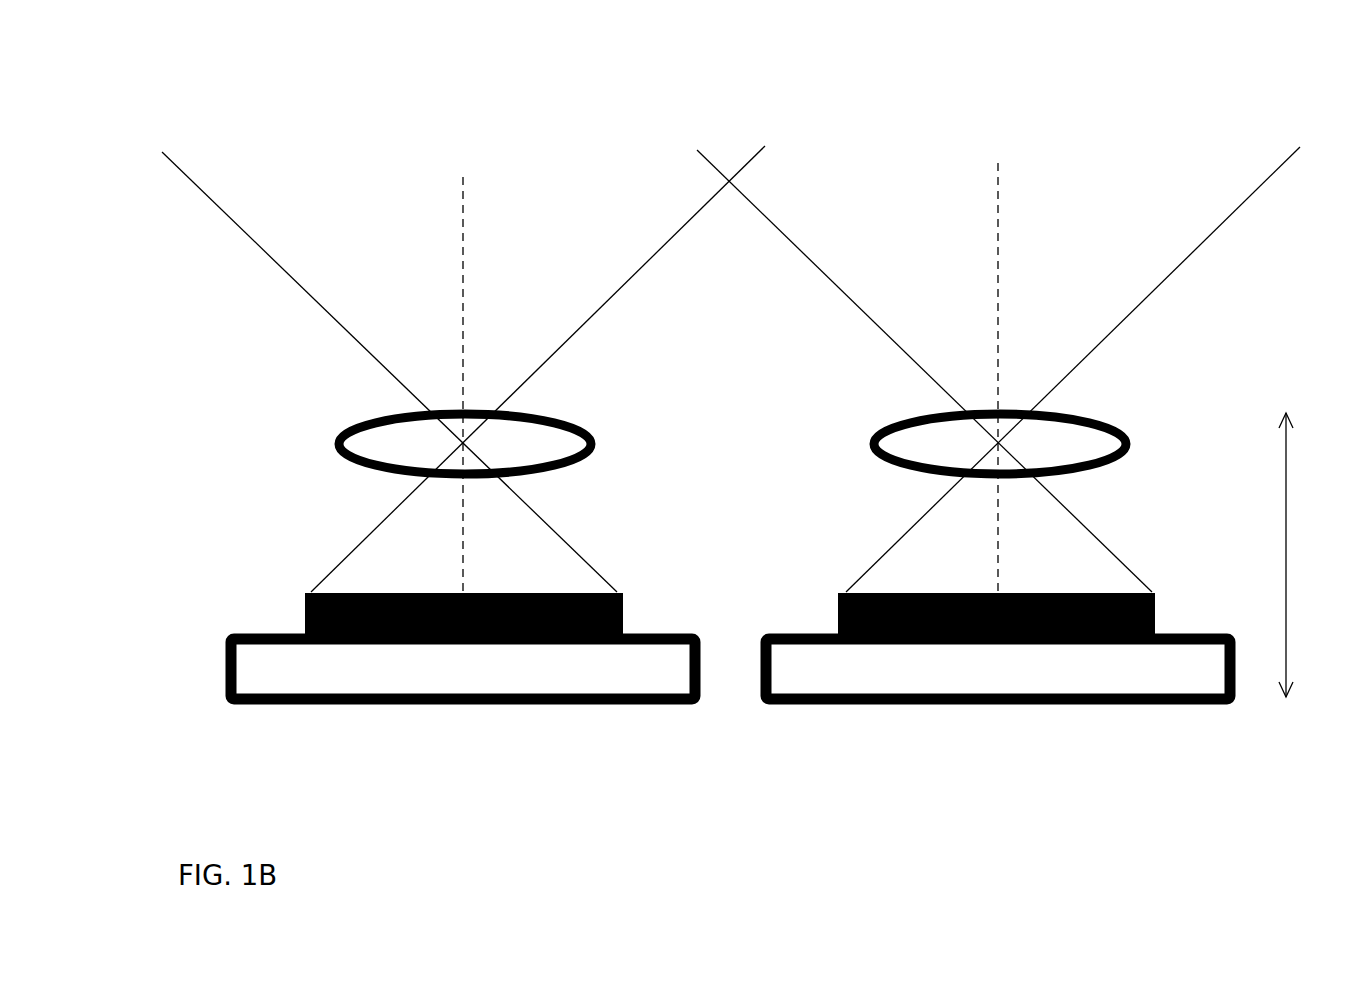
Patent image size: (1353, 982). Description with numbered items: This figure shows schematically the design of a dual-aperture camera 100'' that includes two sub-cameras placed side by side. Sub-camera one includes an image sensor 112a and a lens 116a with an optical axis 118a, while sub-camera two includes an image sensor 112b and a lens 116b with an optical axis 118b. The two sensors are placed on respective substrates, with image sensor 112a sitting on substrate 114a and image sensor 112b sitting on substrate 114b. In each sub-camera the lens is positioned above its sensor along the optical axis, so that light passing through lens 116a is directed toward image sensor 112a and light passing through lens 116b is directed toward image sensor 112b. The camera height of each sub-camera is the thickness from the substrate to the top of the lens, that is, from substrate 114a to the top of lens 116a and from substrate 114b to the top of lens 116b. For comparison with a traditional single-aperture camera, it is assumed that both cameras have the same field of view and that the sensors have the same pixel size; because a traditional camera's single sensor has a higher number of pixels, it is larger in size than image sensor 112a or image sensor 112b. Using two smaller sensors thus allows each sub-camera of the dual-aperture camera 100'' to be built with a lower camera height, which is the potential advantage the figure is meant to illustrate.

The dual-aperture camera 100'' is at (736, 414).
The image sensor 112a is at (295, 610).
The image sensor 112b is at (1157, 615).
The substrate 114a is at (288, 677).
The substrate 114b is at (1192, 677).
The lens 116a is at (340, 433).
The lens 116b is at (1127, 429).
The optical axis 118a is at (462, 252).
The optical axis 118b is at (994, 243).